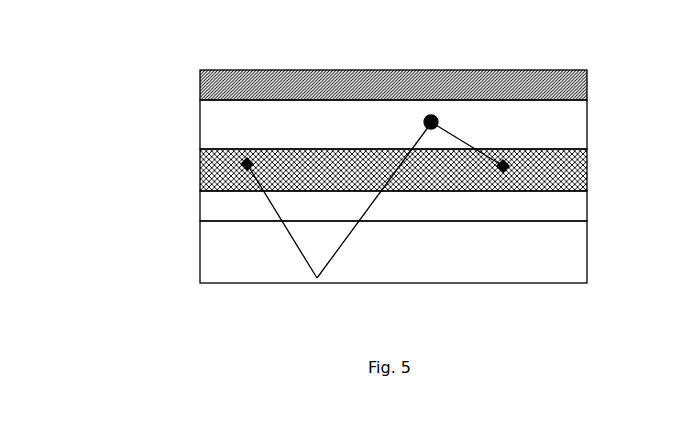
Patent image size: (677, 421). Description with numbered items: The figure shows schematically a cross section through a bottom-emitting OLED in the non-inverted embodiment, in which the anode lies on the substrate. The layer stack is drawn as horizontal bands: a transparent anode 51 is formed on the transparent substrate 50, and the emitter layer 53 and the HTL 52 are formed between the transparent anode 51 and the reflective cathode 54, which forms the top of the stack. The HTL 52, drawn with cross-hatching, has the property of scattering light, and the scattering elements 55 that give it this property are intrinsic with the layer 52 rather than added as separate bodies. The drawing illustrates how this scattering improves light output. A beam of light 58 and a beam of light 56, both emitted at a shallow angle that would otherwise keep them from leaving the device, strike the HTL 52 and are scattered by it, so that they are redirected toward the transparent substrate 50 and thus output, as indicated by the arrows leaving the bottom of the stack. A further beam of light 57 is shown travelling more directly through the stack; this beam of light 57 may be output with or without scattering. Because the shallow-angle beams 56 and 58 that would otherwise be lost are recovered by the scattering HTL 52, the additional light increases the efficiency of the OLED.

The transparent substrate 50 is at (578, 256).
The transparent anode 51 is at (578, 207).
The HTL 52 is at (578, 160).
The emitter layer 53 is at (578, 121).
The reflective cathode 54 is at (578, 78).
The scattering elements 55 is at (503, 166).
The beam of light 56 is at (503, 166).
The beam of light 57 is at (431, 129).
The beam of light 58 is at (247, 164).